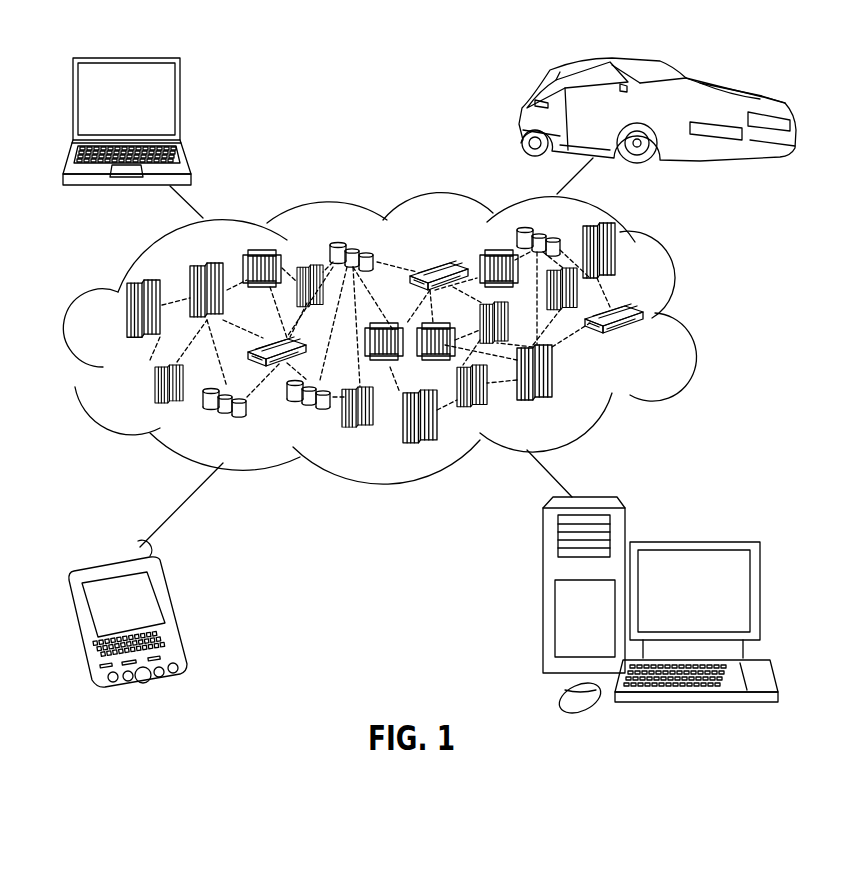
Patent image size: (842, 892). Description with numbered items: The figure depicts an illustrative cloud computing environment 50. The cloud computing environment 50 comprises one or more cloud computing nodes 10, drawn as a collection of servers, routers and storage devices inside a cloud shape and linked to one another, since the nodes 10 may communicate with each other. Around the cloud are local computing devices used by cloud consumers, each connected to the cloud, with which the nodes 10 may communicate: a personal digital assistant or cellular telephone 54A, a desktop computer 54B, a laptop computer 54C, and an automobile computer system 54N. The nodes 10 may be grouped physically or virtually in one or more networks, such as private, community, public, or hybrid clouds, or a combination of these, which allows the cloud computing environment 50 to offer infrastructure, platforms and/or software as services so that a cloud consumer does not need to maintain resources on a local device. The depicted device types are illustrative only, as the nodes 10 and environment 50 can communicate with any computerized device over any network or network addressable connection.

The cloud computing nodes 10 is at (648, 340).
The cloud computing environment 50 is at (692, 313).
The personal digital assistant (PDA) or cellular telephone 54A is at (173, 612).
The desktop computer 54B is at (693, 540).
The laptop computer 54C is at (180, 106).
The automobile computer system 54N is at (522, 114).